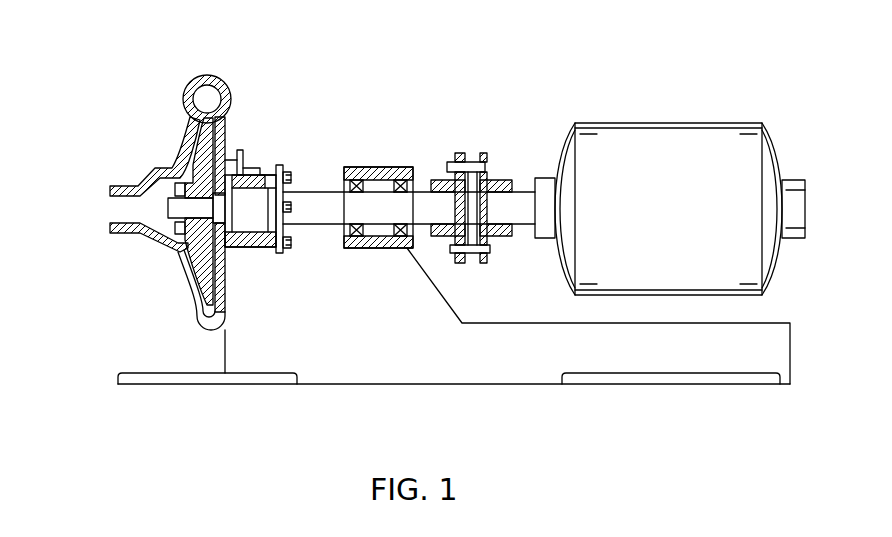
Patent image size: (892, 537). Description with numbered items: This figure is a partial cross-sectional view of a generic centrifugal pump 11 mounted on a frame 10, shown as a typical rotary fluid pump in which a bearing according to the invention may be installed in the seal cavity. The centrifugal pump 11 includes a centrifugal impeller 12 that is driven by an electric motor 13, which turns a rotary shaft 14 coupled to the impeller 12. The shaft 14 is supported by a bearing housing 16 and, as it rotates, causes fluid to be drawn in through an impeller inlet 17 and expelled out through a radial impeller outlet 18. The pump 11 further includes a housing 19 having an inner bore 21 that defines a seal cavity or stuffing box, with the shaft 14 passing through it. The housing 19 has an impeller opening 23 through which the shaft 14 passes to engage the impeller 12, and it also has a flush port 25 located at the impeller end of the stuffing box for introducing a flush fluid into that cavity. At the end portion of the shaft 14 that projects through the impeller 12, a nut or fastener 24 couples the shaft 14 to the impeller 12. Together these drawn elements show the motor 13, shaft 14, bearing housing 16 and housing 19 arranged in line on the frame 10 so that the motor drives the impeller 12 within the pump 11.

The frame 10 is at (520, 367).
The centrifugal pump 11 is at (411, 118).
The centrifugal impeller 12 is at (203, 248).
The electric motor 13 is at (668, 150).
The rotary shaft 14 is at (325, 202).
The bearing housing 16 is at (378, 249).
The impeller inlet 17 is at (122, 210).
The radial impeller outlet 18 is at (208, 96).
The housing 19 is at (288, 170).
The inner bore 21 is at (252, 223).
The impeller opening 23 is at (257, 178).
The nut or fastener 24 is at (160, 167).
The flush port 25 is at (227, 203).